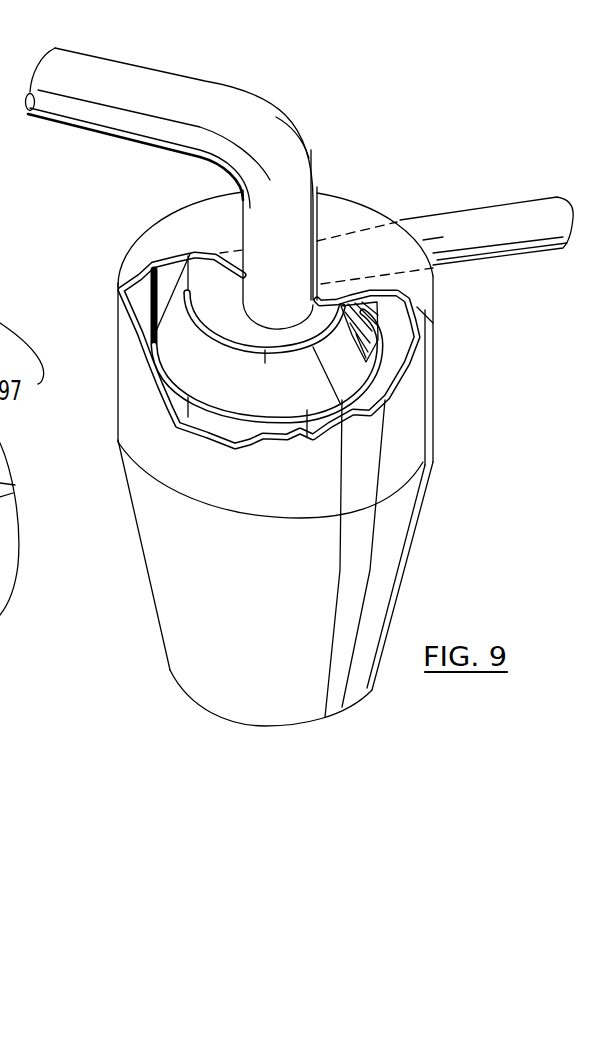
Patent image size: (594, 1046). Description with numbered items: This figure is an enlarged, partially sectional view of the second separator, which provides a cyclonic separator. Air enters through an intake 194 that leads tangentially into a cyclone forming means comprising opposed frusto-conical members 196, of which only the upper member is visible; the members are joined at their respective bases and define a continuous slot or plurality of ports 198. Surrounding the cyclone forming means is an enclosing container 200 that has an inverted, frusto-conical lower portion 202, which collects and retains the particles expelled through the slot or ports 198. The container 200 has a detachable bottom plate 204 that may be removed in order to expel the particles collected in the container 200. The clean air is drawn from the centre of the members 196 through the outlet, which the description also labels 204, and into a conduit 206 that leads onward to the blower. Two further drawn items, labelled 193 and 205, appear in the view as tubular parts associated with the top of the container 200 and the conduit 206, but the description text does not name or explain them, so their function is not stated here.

The side inlet tube 193 is at (508, 238).
The intake 194 is at (210, 287).
The frusto-conical members 196 is at (364, 362).
The slot or ports 198 is at (305, 437).
The enclosing container 200 is at (427, 420).
The frusto-conical lower portion 202 is at (405, 548).
The bottom plate 204 is at (237, 723).
The vertical pipe 205 is at (326, 239).
The conduit 206 is at (175, 87).